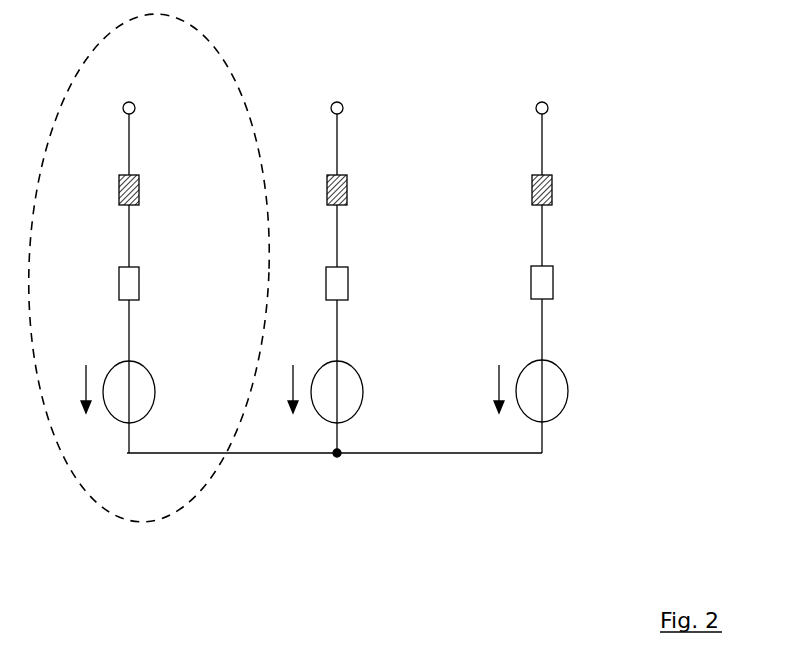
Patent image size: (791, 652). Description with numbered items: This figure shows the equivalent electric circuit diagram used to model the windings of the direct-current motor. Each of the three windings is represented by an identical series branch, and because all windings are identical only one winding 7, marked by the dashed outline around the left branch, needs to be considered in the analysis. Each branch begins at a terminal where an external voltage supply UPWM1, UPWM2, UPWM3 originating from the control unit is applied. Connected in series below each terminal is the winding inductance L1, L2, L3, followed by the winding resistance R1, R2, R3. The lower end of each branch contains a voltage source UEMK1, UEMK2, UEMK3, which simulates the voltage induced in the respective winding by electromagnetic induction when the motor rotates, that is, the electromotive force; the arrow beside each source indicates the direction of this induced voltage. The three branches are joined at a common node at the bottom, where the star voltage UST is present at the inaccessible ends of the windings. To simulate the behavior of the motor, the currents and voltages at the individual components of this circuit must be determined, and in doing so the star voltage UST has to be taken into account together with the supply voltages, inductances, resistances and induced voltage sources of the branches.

The winding 7 is at (139, 521).
The external voltage supply UPWM1 is at (128, 112).
The external voltage supply UPWM2 is at (335, 112).
The external voltage supply UPWM3 is at (540, 112).
The winding inductance L1 is at (162, 221).
The winding inductance L2 is at (370, 221).
The winding inductance L3 is at (576, 220).
The winding resistance R1 is at (163, 314).
The winding resistance R2 is at (370, 314).
The winding resistance R3 is at (576, 313).
The voltage source UEMK1 is at (160, 407).
The voltage source UEMK2 is at (368, 407).
The voltage source UEMK3 is at (574, 406).
The star voltage UST is at (334, 479).